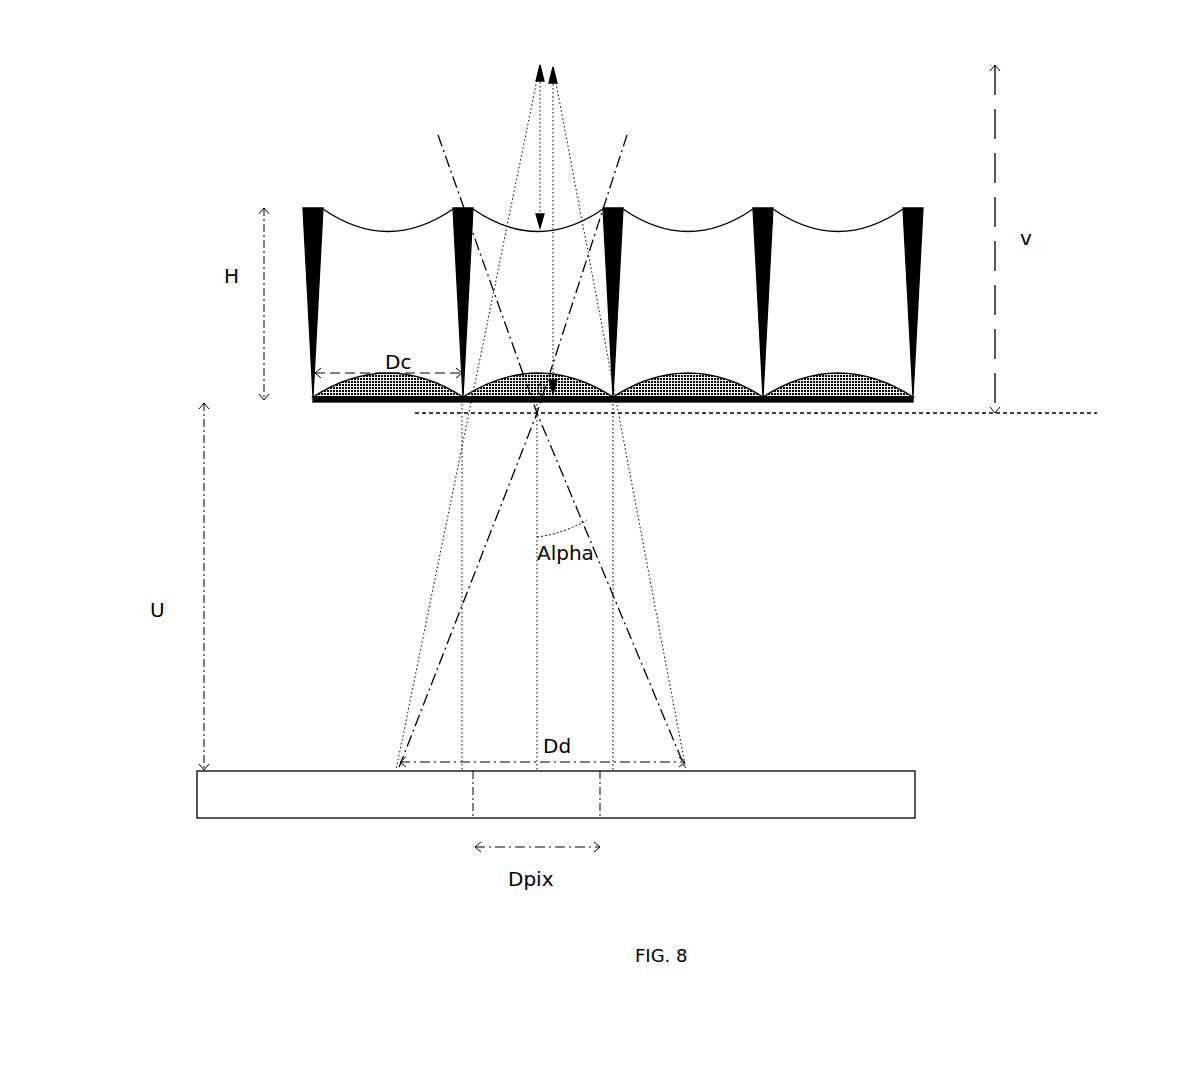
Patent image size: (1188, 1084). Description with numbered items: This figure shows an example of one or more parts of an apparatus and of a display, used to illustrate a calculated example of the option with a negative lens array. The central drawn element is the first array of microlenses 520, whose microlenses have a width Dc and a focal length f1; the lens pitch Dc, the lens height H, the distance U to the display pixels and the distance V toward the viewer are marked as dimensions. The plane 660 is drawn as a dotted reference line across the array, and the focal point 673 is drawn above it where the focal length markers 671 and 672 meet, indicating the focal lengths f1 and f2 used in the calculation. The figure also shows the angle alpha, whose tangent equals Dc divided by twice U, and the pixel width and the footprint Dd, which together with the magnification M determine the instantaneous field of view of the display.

The first array of microlenses 520 is at (367, 518).
The principal plane 660 is at (785, 417).
The focal point 673 is at (538, 62).
The focal length f1 671 is at (584, 237).
The focal length f2 672 is at (538, 176).